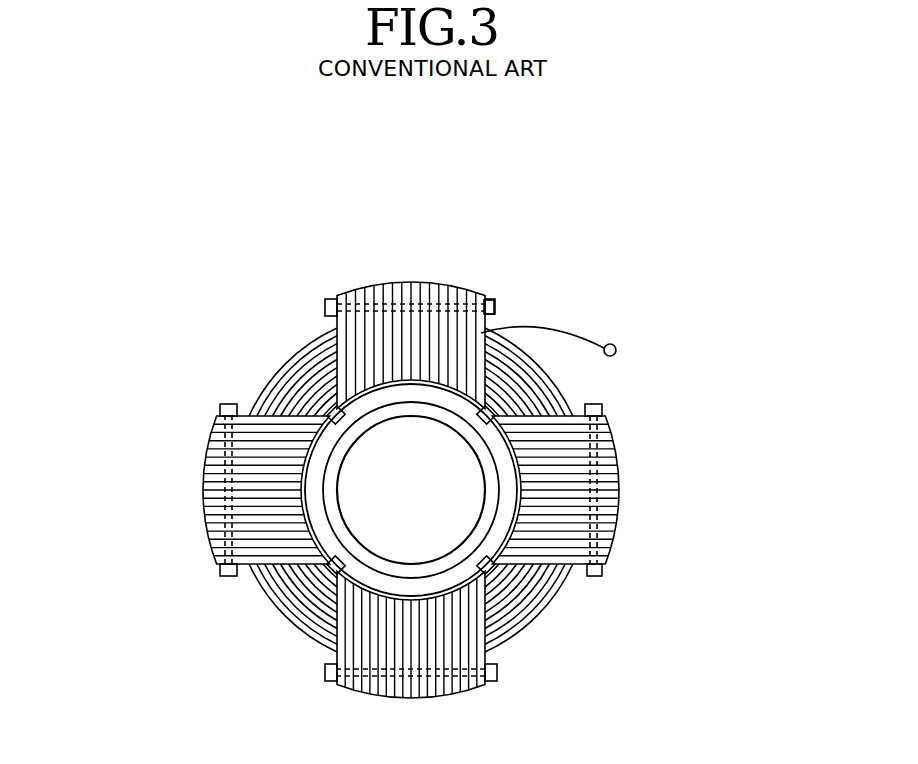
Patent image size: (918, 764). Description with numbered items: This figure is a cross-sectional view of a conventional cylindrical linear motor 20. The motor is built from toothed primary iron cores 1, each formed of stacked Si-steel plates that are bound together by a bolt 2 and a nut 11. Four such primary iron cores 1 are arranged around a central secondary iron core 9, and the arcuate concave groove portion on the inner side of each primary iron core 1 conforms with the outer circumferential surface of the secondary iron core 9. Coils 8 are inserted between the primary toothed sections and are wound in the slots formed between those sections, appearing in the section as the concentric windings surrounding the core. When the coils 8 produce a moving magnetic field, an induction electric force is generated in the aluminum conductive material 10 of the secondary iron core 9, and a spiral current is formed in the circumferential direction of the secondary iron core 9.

The primary iron core 1 is at (420, 257).
The bolt 2 is at (330, 298).
The coil 8 is at (527, 388).
The secondary iron core 9 is at (442, 515).
The aluminum conductive material 10 is at (355, 552).
The nut 11 is at (495, 302).
The cylindrical linear motor 20 is at (633, 318).